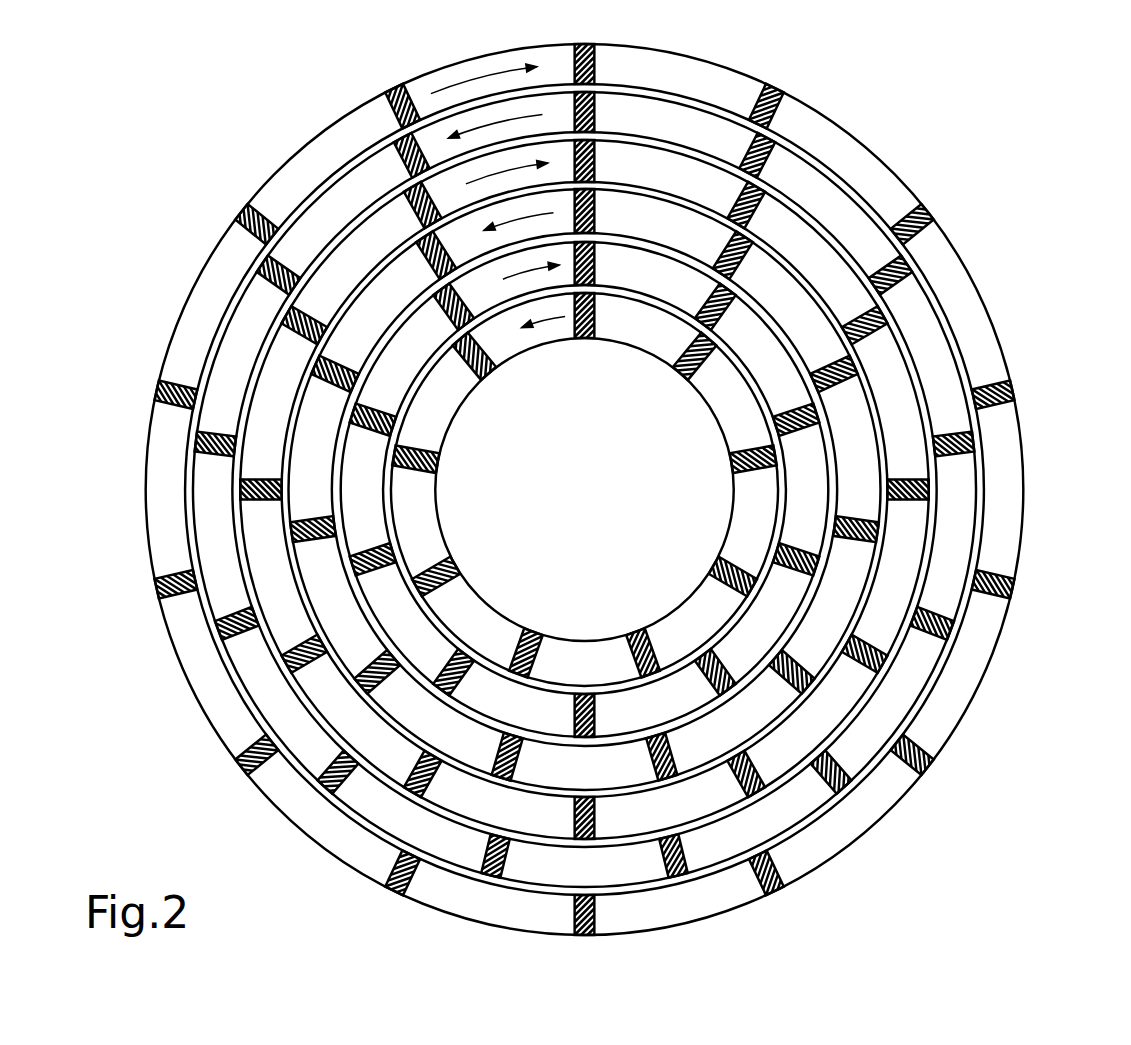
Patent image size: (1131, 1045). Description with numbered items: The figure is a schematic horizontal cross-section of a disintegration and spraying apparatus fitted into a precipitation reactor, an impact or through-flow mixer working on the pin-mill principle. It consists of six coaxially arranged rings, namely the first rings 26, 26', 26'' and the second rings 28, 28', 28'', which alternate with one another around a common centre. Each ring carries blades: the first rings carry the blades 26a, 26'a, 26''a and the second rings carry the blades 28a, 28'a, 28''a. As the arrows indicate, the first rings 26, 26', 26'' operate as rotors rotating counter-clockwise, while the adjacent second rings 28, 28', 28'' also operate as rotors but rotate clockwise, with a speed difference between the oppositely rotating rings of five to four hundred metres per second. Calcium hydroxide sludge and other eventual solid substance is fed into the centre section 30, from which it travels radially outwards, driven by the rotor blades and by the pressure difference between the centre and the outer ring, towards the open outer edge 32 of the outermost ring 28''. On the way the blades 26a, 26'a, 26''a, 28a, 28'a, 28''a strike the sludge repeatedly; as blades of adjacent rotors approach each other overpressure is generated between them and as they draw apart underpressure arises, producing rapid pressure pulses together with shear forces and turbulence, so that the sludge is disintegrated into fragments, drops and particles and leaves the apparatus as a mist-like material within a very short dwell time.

The open outer edge 32 is at (993, 279).
The second ring 28'' is at (585, 489).
The first ring 26'' is at (584, 489).
The second ring 28' is at (584, 489).
The first ring 26' is at (585, 489).
The second ring 28 is at (585, 489).
The first ring 26 is at (584, 489).
The centre section 30 is at (585, 463).
The blade 28''a is at (1048, 560).
The blade 26''a is at (151, 497).
The blade 28'a is at (981, 672).
The blade 26'a is at (409, 507).
The blade 28a is at (792, 552).
The blade 26a is at (447, 573).